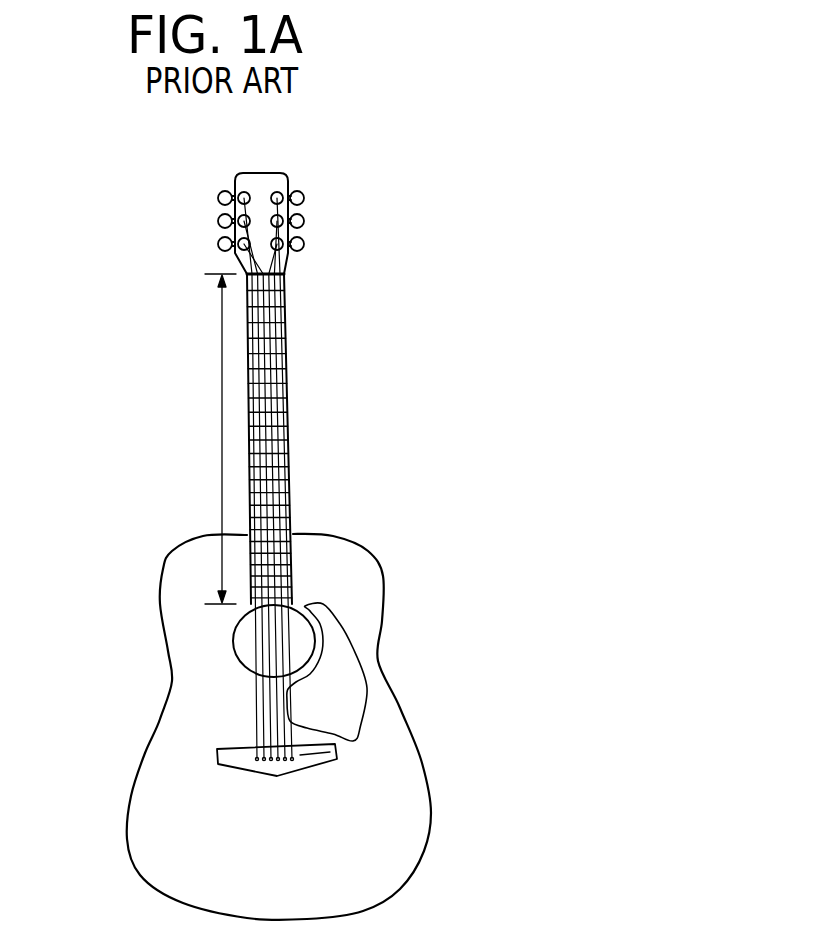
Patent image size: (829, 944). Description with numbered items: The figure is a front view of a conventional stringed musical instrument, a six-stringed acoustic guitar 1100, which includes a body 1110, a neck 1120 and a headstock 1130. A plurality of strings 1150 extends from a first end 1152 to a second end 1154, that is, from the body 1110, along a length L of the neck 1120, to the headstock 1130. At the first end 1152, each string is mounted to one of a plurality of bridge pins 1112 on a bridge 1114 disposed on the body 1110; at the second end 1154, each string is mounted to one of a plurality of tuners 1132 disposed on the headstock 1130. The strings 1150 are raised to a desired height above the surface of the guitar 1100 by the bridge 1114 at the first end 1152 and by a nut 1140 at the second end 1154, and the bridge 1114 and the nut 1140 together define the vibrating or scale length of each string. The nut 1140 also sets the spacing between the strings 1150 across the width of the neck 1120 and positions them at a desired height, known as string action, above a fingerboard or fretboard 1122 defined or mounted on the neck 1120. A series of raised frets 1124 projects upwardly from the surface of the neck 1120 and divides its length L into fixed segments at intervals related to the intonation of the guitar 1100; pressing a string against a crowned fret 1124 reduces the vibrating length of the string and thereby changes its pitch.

The six-stringed acoustic guitar 1100 is at (145, 192).
The body 1110 is at (357, 567).
The bridge pins 1112 is at (258, 764).
The bridge 1114 is at (318, 755).
The neck 1120 is at (290, 425).
The fingerboard or fretboard 1122 is at (290, 483).
The frets 1124 is at (270, 302).
The headstock 1130 is at (265, 182).
The tuners 1132 is at (299, 193).
The nut 1140 is at (285, 273).
The strings 1150 is at (255, 632).
The first end 1152 is at (242, 712).
The second end 1154 is at (221, 230).